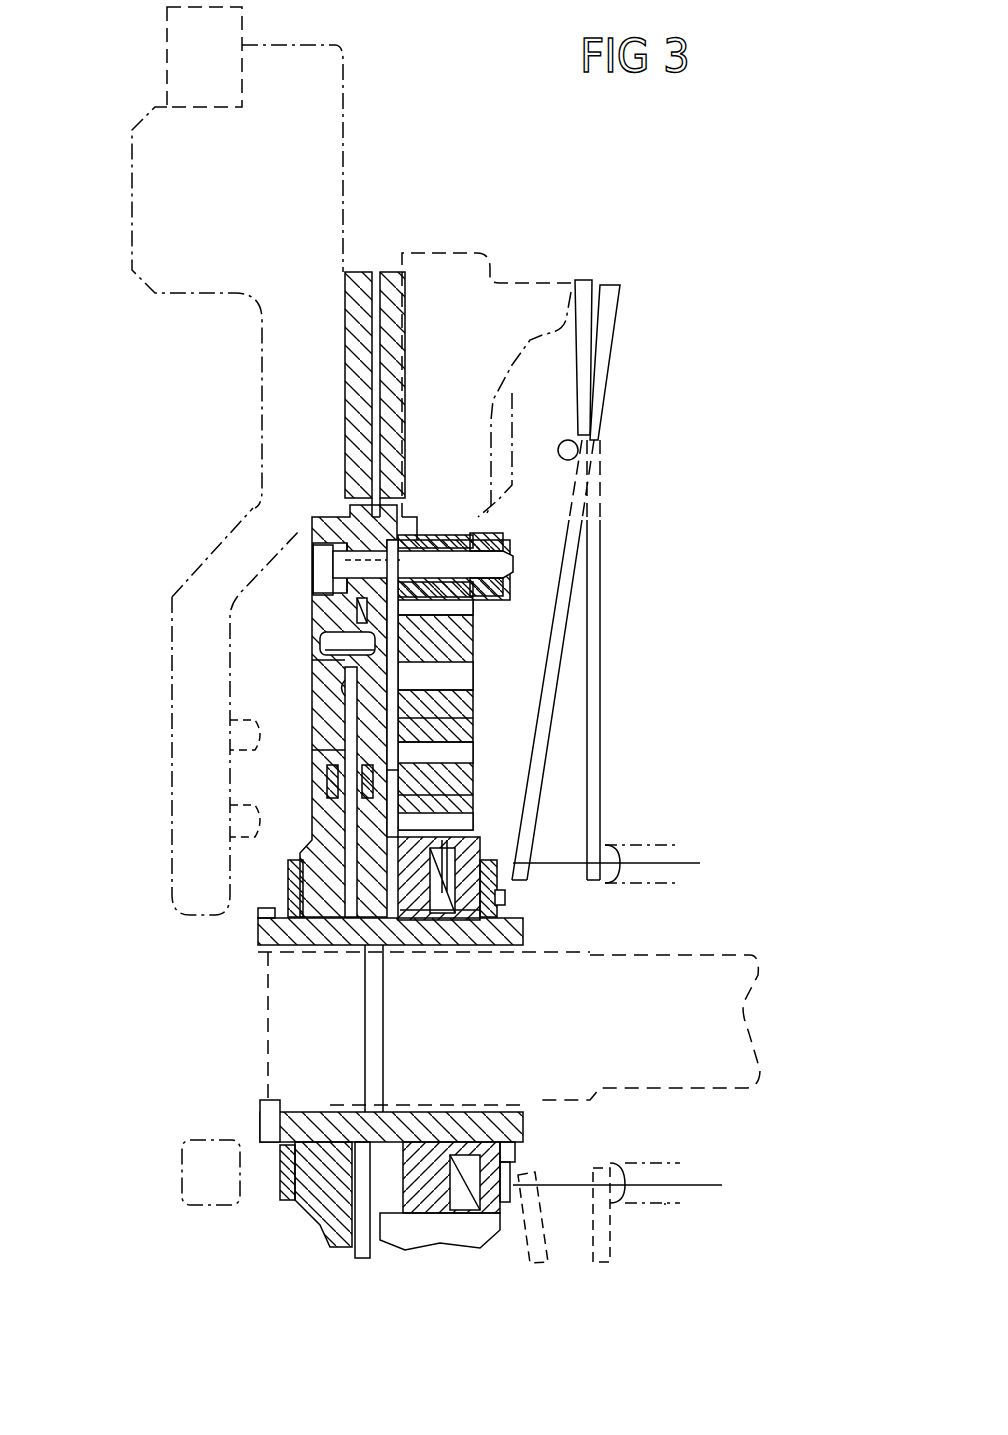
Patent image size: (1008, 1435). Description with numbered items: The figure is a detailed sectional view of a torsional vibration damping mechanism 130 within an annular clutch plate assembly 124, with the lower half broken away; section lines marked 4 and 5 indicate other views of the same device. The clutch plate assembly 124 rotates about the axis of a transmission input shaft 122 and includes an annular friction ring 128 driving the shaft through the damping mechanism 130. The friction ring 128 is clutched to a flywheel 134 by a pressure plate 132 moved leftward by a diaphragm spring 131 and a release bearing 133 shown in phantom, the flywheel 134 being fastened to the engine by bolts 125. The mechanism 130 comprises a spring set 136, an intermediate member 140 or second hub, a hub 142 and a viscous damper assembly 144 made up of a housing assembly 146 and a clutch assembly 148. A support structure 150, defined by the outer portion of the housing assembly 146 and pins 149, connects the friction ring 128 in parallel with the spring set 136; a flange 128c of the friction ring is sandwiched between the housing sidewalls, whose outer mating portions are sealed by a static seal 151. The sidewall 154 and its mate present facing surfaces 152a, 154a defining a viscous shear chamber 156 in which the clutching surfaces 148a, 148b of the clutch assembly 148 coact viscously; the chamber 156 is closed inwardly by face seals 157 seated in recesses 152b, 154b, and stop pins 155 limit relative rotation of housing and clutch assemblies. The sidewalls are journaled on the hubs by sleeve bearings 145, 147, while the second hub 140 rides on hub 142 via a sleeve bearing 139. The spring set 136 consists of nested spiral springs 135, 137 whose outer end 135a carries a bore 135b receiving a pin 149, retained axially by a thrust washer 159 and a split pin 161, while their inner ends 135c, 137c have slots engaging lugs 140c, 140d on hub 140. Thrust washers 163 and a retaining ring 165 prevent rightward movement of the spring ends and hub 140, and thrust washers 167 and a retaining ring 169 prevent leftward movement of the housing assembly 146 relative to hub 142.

The transmission input shaft 122 is at (710, 953).
The clutch plate assembly 124 is at (685, 492).
The bolts 125 is at (233, 846).
The friction ring 128 is at (362, 258).
The flange 128c is at (385, 265).
The torsional vibration damping mechanism 130 is at (495, 705).
The diaphragm spring 131 is at (618, 307).
The pressure plate 132 is at (527, 282).
The release bearing 133 is at (668, 1203).
The flywheel 134 is at (345, 75).
The spiral wound spring 135 is at (480, 730).
The radially outer end 135a is at (480, 517).
The axially extending bore 135b is at (478, 595).
The inner end 135c is at (495, 870).
The spring set 136 is at (480, 720).
The spiral wound spring 137 is at (477, 627).
The inner end 137c is at (505, 1172).
The sleeve bearing 139 is at (413, 1142).
The intermediate member 140 is at (437, 915).
The lug 140c is at (495, 897).
The lug 140d is at (488, 1248).
The hub 142 is at (248, 937).
The viscous damper assembly 144 is at (278, 695).
The sleeve bearing 145 is at (322, 1112).
The housing assembly 146 is at (296, 599).
The sleeve bearing 147 is at (392, 1248).
The clutch assembly 148 is at (325, 715).
The clutching surface 148a is at (313, 733).
The clutching surface 148b is at (480, 697).
The pin 149 is at (503, 562).
The support structure 150 is at (420, 510).
The static seal 151 is at (477, 607).
The surface 152a is at (313, 683).
The annular recess 152b is at (313, 763).
The sidewall 154 is at (505, 682).
The surface 154a is at (313, 748).
The annular recess 154b is at (477, 763).
The stop pin 155 is at (336, 650).
The chamber 156 is at (347, 633).
The face seal 157 is at (313, 782).
The thrust washer 159 is at (485, 528).
The split pin 161 is at (503, 537).
The thrust washer 163 is at (515, 1157).
The retaining ring 165 is at (515, 937).
The thrust washer 167 is at (295, 1180).
The retaining ring 169 is at (283, 1148).
The section line 4 is at (480, 828).
The section line 5 is at (300, 508).